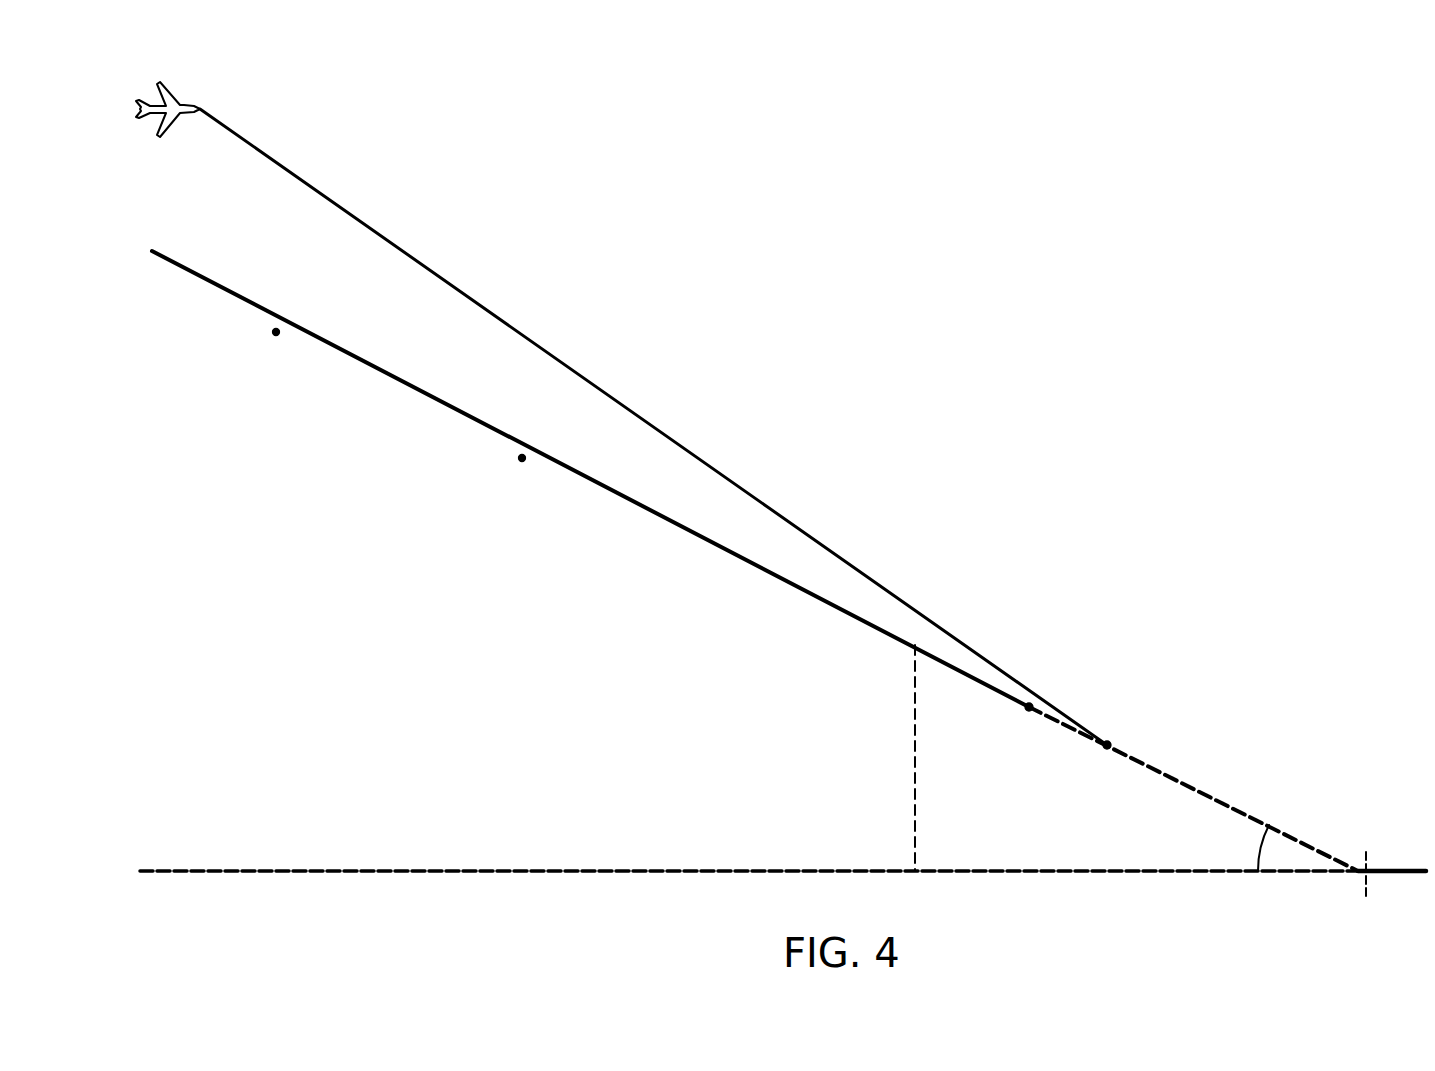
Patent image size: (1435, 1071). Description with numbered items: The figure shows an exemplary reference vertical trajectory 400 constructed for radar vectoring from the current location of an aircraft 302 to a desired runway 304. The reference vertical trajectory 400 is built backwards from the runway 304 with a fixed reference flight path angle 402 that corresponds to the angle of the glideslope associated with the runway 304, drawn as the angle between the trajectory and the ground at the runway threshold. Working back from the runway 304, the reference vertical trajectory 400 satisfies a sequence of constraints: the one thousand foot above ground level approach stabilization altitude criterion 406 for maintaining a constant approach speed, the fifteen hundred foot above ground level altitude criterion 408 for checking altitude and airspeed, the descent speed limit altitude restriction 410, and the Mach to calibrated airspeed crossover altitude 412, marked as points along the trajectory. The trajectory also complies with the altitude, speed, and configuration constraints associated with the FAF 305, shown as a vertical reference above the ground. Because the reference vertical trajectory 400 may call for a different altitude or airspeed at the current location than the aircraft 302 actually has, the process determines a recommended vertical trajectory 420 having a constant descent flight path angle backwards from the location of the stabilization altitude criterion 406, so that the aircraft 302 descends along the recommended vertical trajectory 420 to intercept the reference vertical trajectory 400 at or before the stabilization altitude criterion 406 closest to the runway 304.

The aircraft 302 is at (140, 118).
The runway 304 is at (1394, 870).
The FAF 305 is at (915, 756).
The reference vertical trajectory 400 is at (470, 412).
The reference flight path angle 402 is at (1258, 850).
The approach stabilization altitude criterion 406 is at (1107, 745).
The altitude criterion 408 is at (1029, 706).
The descent speed limit altitude restriction 410 is at (522, 461).
The Mach to calibrated airspeed crossover altitude 412 is at (276, 335).
The recommended vertical trajectory 420 is at (705, 460).